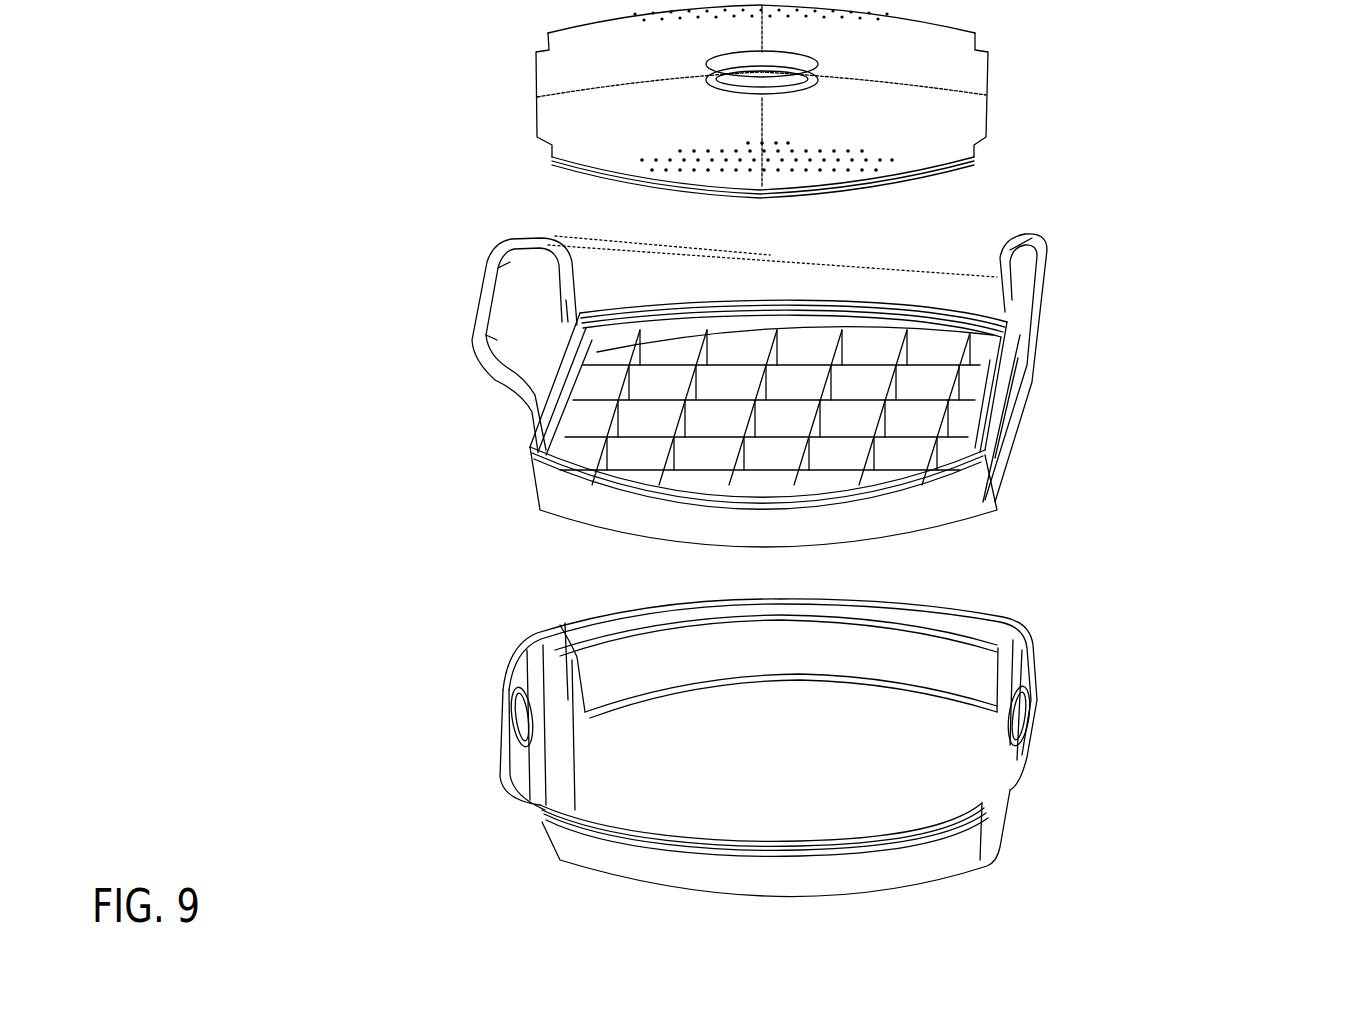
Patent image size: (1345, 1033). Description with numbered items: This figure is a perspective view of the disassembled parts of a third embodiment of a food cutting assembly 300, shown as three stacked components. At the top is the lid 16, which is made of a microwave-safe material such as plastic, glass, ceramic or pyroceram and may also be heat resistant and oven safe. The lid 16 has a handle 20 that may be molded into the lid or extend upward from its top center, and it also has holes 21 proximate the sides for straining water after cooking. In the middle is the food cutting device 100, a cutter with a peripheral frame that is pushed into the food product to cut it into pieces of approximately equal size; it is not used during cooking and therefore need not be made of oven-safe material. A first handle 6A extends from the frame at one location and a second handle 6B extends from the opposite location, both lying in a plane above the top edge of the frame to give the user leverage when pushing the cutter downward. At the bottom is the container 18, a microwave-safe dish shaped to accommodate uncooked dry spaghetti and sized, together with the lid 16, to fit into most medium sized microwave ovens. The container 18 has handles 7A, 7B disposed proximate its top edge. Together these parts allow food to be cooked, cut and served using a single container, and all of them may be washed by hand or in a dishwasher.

The food cutting assembly 300 is at (1342, 64).
The lid 16 is at (721, 101).
The handle 20 is at (778, 68).
The holes 21 is at (810, 155).
The food cutting device 100 is at (705, 390).
The first handle 6A is at (482, 288).
The second handle 6B is at (1042, 287).
The container 18 is at (692, 748).
The handle 7A is at (517, 703).
The handle 7B is at (1035, 703).